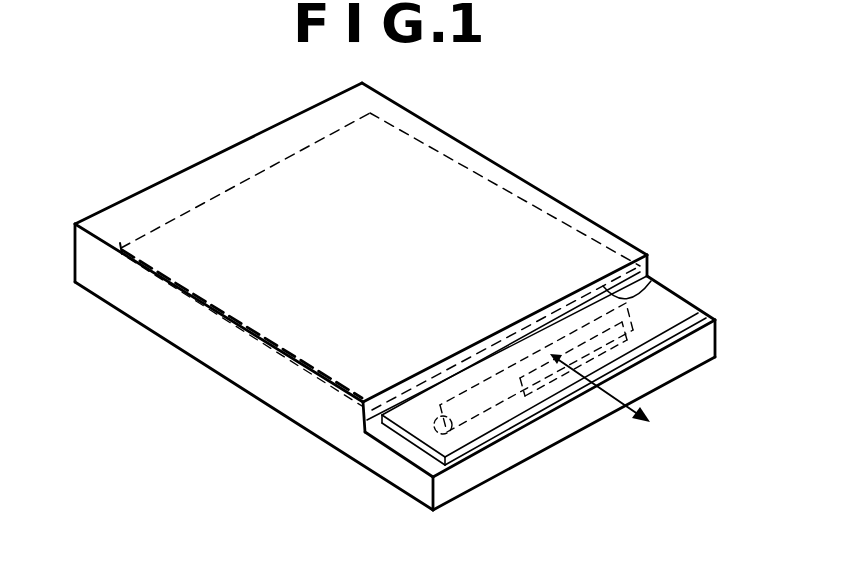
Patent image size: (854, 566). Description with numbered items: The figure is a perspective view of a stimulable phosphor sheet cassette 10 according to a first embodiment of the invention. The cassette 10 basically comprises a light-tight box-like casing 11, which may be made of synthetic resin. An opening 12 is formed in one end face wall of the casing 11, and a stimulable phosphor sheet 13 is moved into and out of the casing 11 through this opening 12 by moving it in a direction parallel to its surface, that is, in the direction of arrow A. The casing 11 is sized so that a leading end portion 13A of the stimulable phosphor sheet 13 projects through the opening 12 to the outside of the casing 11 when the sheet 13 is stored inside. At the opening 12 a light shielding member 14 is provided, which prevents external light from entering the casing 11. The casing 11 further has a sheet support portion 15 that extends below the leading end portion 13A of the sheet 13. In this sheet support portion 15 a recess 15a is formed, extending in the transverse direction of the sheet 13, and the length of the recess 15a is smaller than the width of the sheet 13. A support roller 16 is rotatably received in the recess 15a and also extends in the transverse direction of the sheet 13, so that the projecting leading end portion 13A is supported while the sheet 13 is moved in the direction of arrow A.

The stimulable phosphor sheet cassette 10 is at (573, 136).
The casing 11 is at (513, 235).
The opening 12 is at (660, 286).
The stimulable phosphor sheet 13 is at (276, 362).
The leading end portion 13A is at (417, 417).
The light shielding member 14 is at (467, 350).
The sheet support portion 15 is at (413, 486).
The recess 15a is at (443, 365).
The support roller 16 is at (521, 358).
The direction of arrow A is at (600, 397).